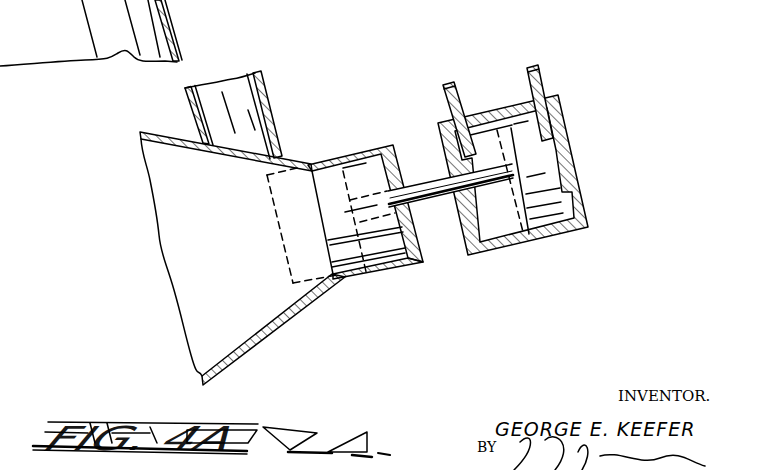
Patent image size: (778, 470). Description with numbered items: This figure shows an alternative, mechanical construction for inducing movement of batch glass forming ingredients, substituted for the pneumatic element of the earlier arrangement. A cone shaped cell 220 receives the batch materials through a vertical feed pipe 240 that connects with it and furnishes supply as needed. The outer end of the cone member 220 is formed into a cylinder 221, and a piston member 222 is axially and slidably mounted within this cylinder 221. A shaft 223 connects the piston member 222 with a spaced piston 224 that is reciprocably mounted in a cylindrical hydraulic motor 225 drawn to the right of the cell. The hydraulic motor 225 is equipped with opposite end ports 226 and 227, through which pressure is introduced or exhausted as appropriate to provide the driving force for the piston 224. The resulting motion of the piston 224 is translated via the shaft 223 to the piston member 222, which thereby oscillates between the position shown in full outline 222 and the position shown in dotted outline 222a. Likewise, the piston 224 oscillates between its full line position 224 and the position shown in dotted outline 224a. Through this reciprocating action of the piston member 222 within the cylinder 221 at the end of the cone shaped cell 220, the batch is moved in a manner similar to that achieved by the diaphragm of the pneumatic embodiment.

The cone shaped cell 220 is at (300, 343).
The cylinder 221 is at (388, 272).
The piston member 222 is at (362, 159).
The dotted outline position of piston member 222a is at (292, 184).
The shaft 223 is at (466, 194).
The piston 224 is at (561, 234).
The dotted outline position of piston 224a is at (504, 226).
The cylindrical hydraulic motor 225 is at (612, 206).
The end port 226 is at (571, 43).
The end port 227 is at (472, 56).
The vertical feed pipe 240 is at (263, 94).